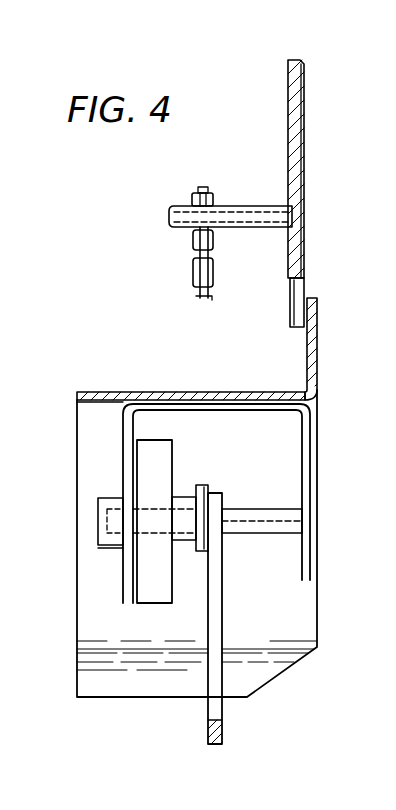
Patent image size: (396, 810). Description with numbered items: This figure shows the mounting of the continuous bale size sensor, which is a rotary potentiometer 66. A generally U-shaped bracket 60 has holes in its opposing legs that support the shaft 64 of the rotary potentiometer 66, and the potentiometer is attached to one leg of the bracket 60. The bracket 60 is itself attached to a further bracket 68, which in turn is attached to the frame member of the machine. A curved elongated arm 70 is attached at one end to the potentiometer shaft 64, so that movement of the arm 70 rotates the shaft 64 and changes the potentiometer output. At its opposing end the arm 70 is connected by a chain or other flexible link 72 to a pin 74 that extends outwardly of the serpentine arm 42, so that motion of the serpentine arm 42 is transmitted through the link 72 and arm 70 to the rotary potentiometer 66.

The serpentine arm 42 is at (305, 148).
The pin 74 is at (252, 212).
The chain or other flexible link 72 is at (218, 272).
The further bracket 68 is at (182, 392).
The bracket 60 is at (232, 410).
The rotary potentiometer 66 is at (172, 470).
The shaft 64 is at (274, 515).
The curved elongated arm 70 is at (215, 637).